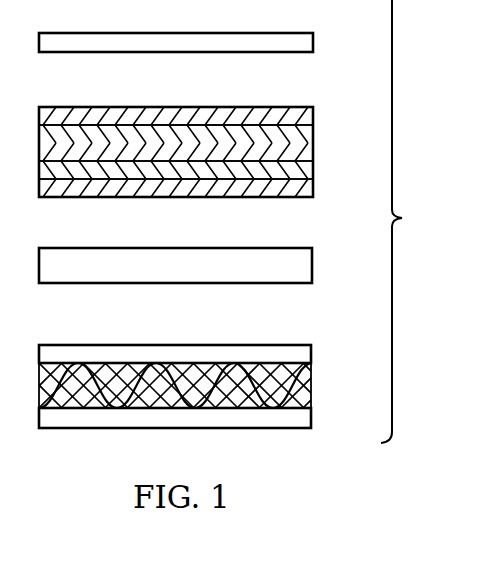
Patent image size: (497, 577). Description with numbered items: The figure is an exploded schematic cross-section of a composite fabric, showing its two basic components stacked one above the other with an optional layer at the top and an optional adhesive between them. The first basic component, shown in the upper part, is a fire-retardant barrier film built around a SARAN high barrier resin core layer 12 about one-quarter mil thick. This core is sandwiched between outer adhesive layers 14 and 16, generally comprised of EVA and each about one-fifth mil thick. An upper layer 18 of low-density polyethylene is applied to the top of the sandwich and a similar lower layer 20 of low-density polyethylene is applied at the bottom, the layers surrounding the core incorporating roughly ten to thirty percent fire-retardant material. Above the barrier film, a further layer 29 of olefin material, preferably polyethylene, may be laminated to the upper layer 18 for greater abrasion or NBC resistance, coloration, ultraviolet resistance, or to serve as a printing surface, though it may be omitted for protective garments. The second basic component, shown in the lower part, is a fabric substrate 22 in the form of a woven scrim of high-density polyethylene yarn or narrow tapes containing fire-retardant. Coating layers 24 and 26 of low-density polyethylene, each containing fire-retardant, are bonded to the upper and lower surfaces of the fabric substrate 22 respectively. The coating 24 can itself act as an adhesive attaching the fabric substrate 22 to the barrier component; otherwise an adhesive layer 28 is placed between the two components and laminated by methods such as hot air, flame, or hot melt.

The layer of olefin material 29 is at (313, 42).
The upper layer 18 is at (203, 149).
The outer adhesive layer 14 is at (313, 136).
The high barrier resin core layer 12 is at (313, 152).
The outer adhesive layer 16 is at (313, 168).
The lower layer 20 is at (313, 190).
The adhesive layer 28 is at (312, 262).
The coating layer 24 is at (311, 355).
The fabric substrate 22 is at (311, 392).
The coating layer 26 is at (311, 415).